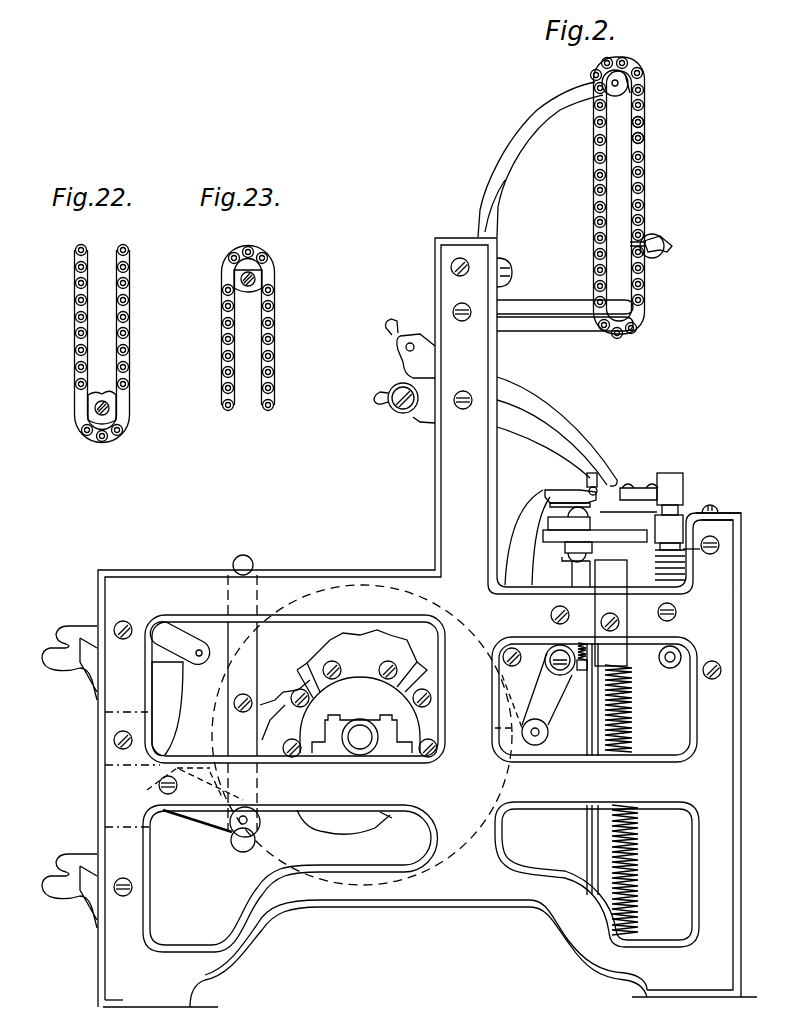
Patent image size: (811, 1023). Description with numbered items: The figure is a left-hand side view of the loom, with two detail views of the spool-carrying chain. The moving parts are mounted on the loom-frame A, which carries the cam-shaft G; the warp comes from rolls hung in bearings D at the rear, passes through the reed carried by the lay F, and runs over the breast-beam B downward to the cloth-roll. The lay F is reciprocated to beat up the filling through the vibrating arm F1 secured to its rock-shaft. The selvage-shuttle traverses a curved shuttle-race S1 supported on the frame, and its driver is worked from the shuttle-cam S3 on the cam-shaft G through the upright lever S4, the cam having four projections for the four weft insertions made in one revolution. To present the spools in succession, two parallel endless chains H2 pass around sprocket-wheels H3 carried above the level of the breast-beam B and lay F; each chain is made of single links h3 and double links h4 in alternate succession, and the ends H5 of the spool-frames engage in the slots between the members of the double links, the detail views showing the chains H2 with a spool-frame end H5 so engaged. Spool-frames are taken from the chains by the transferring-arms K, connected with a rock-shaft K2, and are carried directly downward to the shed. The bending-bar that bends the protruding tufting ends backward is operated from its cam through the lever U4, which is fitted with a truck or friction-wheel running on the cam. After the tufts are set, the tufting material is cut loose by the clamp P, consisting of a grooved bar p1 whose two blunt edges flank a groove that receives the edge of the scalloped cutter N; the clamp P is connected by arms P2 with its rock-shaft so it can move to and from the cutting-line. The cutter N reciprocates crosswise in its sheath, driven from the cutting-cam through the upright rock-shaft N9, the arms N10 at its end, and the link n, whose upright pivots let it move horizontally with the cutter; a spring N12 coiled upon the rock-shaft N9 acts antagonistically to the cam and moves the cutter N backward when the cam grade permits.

In FIG. 2, the loom-frame A is at (427, 622).
In FIG. 2, the breast-beam B is at (770, 517).
In FIG. 2, the bearings D is at (46, 646).
In FIG. 2, the cam-shaft G is at (360, 737).
In FIG. 2, the endless chains H2 is at (650, 207).
In FIG. 22, the endless chains H2 is at (130, 333).
In FIG. 23, the endless chains H2 is at (276, 329).
In FIG. 2, the sprocket-wheels H3 is at (640, 259).
In FIG. 22, the sprocket-wheels H3 is at (115, 376).
In FIG. 2, the spool-frame ends H5 is at (612, 103).
In FIG. 23, the spool-frame ends H5 is at (252, 290).
In FIG. 2, the single links h3 is at (647, 128).
In FIG. 2, the double links h4 is at (647, 147).
In FIG. 2, the transferring-arms K is at (557, 431).
In FIG. 2, the rock-shaft K2 is at (388, 406).
In FIG. 2, the clamp P is at (552, 492).
In FIG. 2, the grooved bar p1 is at (566, 500).
In FIG. 2, the arms P2 is at (527, 536).
In FIG. 2, the shuttle-race S1 is at (595, 547).
In FIG. 2, the shuttle-cam S3 is at (340, 668).
In FIG. 2, the upright lever S4 is at (228, 660).
In FIG. 2, the lever U4 is at (258, 656).
In FIG. 2, the scalloped cutter N is at (612, 566).
In FIG. 2, the upright rock-shaft N9 is at (665, 473).
In FIG. 2, the arms N10 is at (614, 518).
In FIG. 2, the spring N12 is at (630, 584).
In FIG. 2, the link n is at (639, 480).
In FIG. 2, the vibrating arm F1 is at (535, 707).
In FIG. 2, the lay F is at (522, 722).